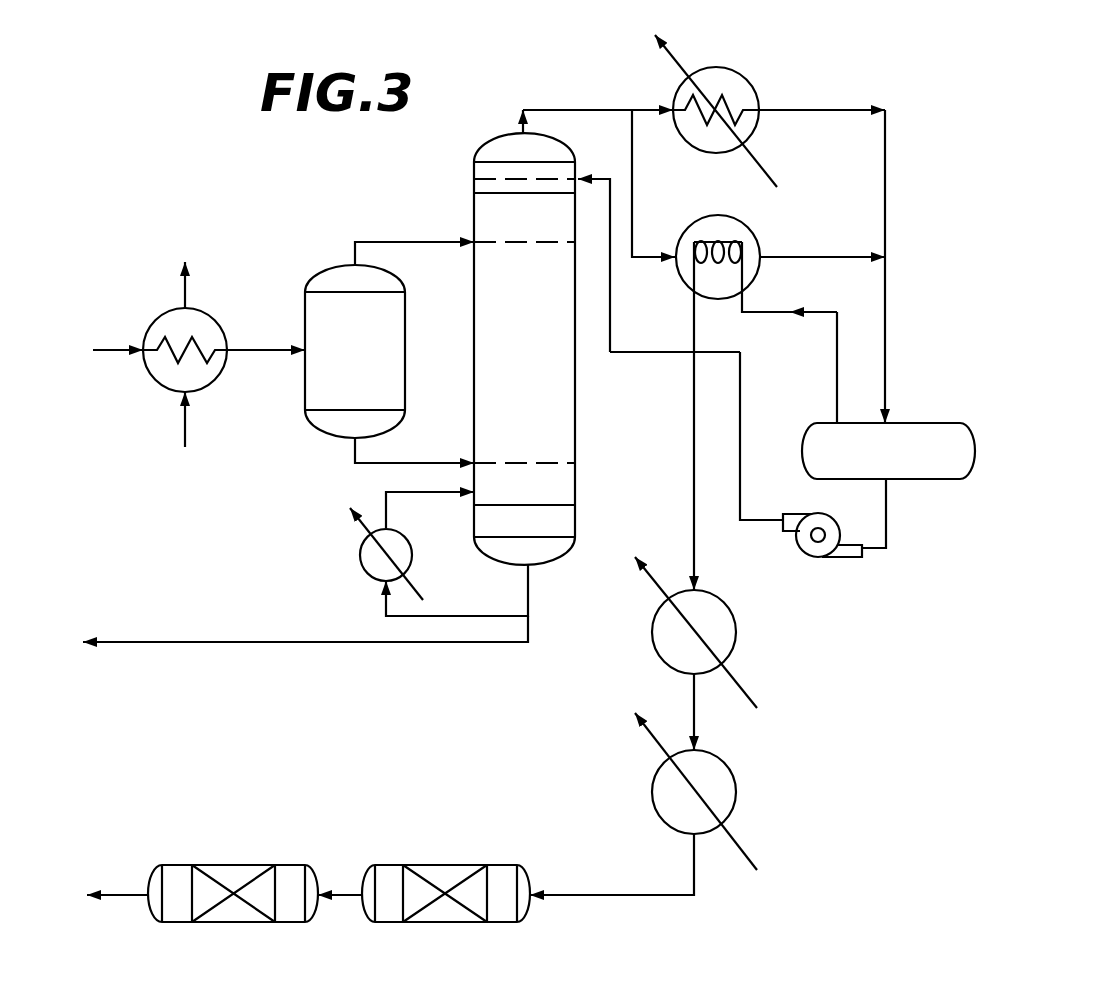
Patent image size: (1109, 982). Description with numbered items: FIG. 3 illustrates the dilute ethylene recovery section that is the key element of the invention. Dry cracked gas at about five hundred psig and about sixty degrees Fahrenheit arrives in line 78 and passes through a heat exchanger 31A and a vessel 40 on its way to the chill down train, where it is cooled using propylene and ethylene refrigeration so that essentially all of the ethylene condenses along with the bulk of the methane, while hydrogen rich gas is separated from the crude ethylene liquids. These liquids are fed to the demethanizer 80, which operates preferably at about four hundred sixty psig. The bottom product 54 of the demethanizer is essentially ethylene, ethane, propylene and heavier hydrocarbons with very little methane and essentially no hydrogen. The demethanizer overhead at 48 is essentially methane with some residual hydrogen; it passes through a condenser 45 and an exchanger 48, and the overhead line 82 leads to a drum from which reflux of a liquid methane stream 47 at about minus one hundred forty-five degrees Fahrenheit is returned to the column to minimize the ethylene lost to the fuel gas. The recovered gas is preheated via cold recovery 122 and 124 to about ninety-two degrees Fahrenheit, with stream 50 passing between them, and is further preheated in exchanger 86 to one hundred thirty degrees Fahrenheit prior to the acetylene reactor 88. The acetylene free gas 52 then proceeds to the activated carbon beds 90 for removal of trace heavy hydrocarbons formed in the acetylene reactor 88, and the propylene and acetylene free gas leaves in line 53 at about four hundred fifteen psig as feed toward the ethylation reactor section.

The heat exchanger 31A is at (167, 312).
The line 78 is at (107, 344).
The vessel 40 is at (262, 344).
The demethanizer 80 is at (575, 428).
The bottom product 54 is at (102, 640).
The condenser 45 is at (820, 256).
The overhead line 82 is at (885, 158).
The demethanizer overhead 48 is at (820, 314).
The cold recovery 122 is at (683, 283).
The liquid methane stream 47 is at (740, 408).
The cold recovery 124 is at (738, 637).
The stream line 50 is at (694, 694).
The exchanger 86 is at (740, 790).
The acetylene reactor 88 is at (458, 923).
The acetylene free gas 52 is at (342, 890).
The activated carbon beds 90 is at (250, 923).
The line 53 is at (115, 890).